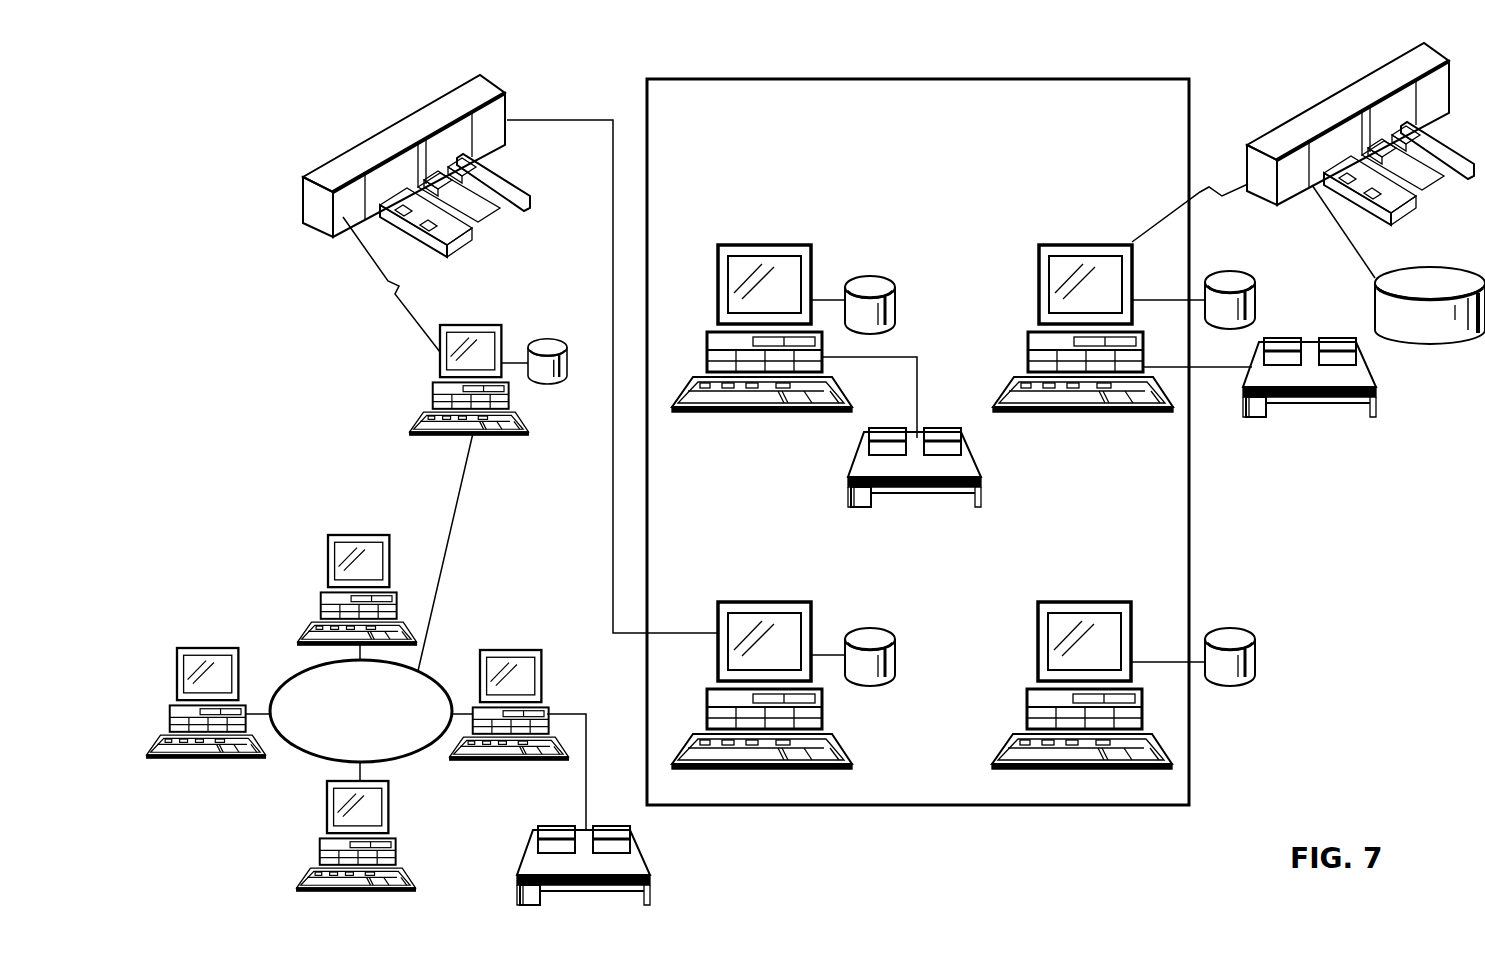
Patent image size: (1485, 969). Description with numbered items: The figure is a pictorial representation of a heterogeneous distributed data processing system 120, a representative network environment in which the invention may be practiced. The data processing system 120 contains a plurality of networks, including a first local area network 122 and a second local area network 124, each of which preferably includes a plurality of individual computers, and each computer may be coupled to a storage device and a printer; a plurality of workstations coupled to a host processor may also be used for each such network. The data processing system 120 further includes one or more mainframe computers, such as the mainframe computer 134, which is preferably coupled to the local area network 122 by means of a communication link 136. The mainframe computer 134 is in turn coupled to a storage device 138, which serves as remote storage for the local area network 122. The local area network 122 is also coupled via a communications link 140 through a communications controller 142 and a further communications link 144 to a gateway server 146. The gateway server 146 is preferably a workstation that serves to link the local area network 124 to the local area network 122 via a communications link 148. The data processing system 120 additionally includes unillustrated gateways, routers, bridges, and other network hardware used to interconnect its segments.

The distributed data processing system 120 is at (637, 85).
The local area network 122 is at (797, 152).
The local area network 124 is at (308, 764).
The mainframe computer 134 is at (1268, 140).
The communication link 136 is at (1220, 170).
The storage device 138 is at (1428, 338).
The communications link 140 is at (611, 258).
The communications controller 142 is at (382, 143).
The communications link 144 is at (410, 321).
The gateway server 146 is at (484, 322).
The communications link 148 is at (455, 497).